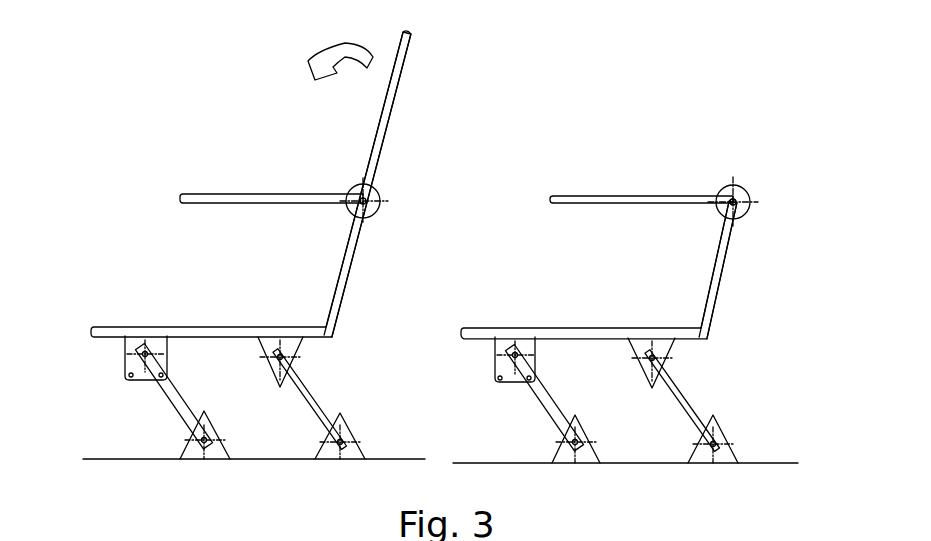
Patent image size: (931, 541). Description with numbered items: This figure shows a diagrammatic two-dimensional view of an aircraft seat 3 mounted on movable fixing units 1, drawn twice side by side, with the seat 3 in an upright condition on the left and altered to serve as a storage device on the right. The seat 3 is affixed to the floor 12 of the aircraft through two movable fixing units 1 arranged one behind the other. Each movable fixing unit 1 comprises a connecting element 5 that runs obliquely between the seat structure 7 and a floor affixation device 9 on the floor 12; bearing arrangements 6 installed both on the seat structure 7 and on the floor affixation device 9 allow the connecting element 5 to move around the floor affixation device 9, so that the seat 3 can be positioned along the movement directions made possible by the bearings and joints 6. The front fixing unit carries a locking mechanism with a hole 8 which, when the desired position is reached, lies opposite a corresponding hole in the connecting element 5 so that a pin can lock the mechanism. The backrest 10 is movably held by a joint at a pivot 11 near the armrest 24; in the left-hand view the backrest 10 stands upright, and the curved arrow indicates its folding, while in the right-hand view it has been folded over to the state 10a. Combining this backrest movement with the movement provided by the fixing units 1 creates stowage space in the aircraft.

The movable fixing unit 1 is at (550, 443).
The seat 3 is at (330, 279).
The connecting element 5 is at (533, 402).
The bearing arrangement 6 is at (508, 354).
The seat structure 7 is at (672, 360).
The hole 8 is at (535, 375).
The floor affixation device 9 is at (598, 447).
The backrest 10 is at (405, 80).
The folded-over state of backrest 10a is at (655, 192).
The pivot axis 11 is at (735, 183).
The floor 12 is at (773, 464).
The armrest 24 is at (567, 190).